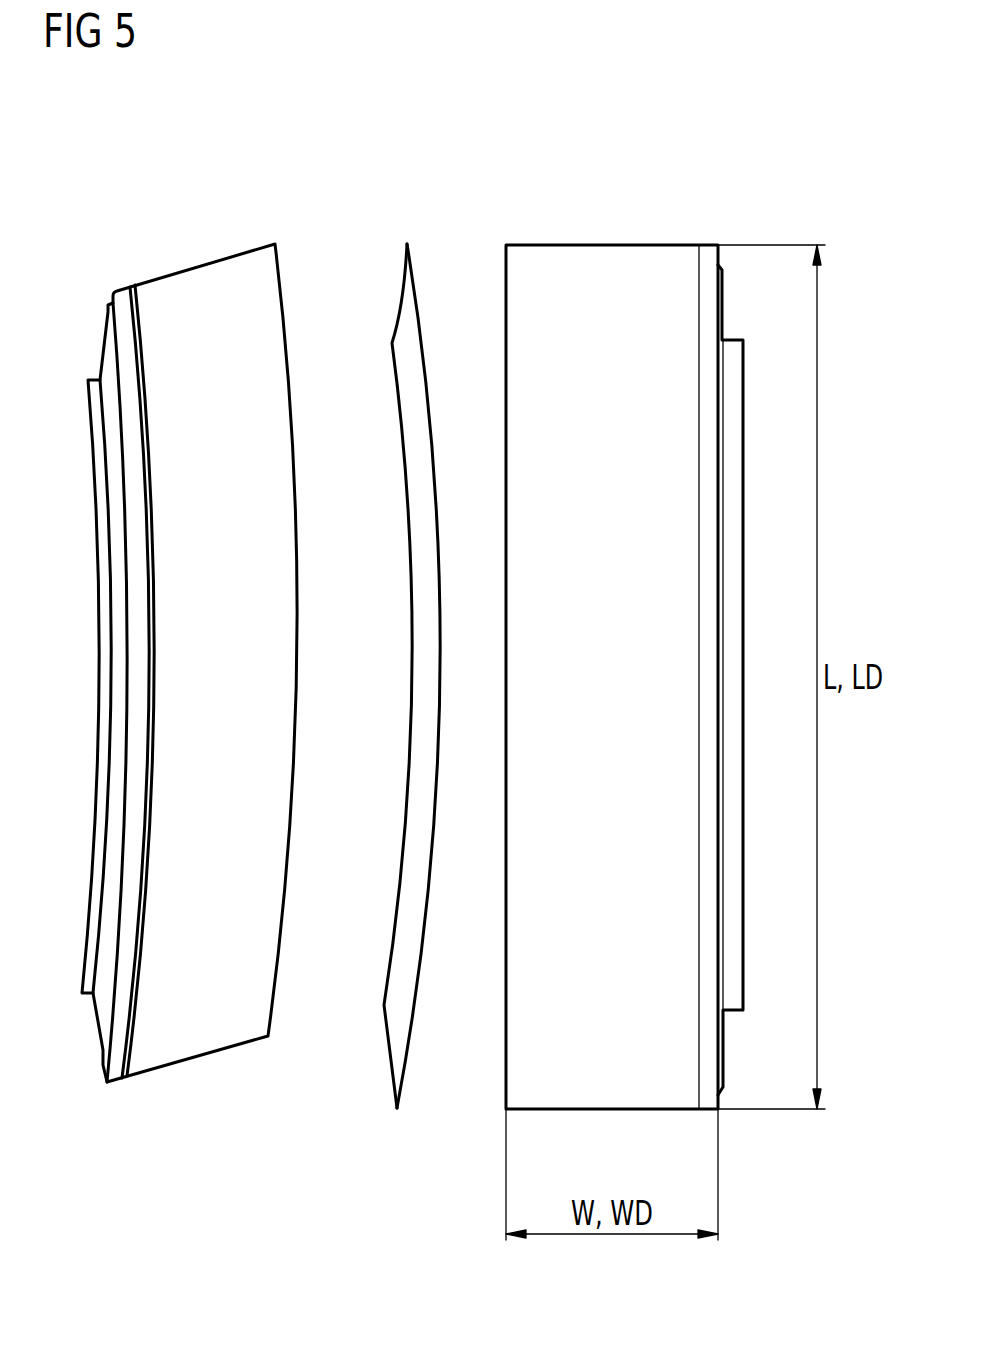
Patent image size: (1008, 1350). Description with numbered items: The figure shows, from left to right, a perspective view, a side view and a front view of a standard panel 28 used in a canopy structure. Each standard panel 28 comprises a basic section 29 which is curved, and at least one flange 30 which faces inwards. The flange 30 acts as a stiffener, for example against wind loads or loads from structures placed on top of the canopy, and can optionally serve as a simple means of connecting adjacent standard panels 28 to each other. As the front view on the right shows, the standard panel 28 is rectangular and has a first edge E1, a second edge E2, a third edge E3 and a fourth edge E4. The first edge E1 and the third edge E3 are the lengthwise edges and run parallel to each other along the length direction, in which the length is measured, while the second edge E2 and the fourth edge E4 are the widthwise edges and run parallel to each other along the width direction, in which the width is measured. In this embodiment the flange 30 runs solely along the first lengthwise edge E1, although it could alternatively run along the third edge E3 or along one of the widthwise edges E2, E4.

The standard panel 28 is at (422, 607).
The basic section 29 is at (262, 297).
The flange 30 is at (113, 694).
The first edge E1 is at (723, 298).
The second edge E2 is at (612, 1110).
The third edge E3 is at (506, 998).
The fourth edge E4 is at (635, 246).